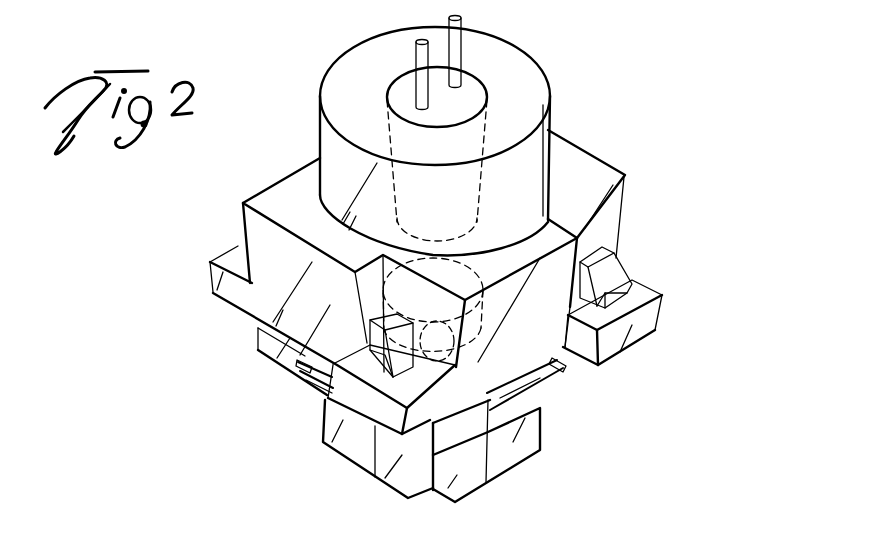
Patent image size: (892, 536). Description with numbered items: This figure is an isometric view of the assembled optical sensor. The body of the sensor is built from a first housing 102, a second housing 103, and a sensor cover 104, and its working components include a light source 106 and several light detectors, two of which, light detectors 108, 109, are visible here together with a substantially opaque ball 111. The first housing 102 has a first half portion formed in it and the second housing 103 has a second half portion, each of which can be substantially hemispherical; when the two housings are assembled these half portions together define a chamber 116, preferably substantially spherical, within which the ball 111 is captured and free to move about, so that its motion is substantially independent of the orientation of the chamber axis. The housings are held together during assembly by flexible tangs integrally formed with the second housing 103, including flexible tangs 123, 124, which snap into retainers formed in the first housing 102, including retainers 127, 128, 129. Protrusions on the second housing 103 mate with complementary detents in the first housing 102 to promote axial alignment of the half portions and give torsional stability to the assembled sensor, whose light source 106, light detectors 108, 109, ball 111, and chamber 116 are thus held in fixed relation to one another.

The first housing 102 is at (618, 187).
The second housing 103 is at (450, 432).
The sensor cover 104 is at (540, 432).
The light source 106 is at (473, 88).
The light detector 108 is at (560, 377).
The light detector 109 is at (297, 372).
The substantially opaque ball 111 is at (483, 310).
The chamber 116 is at (455, 345).
The flexible tang 123 is at (601, 260).
The flexible tang 124 is at (373, 340).
The retainer 127 is at (647, 292).
The retainer 128 is at (323, 442).
The retainer 129 is at (237, 252).